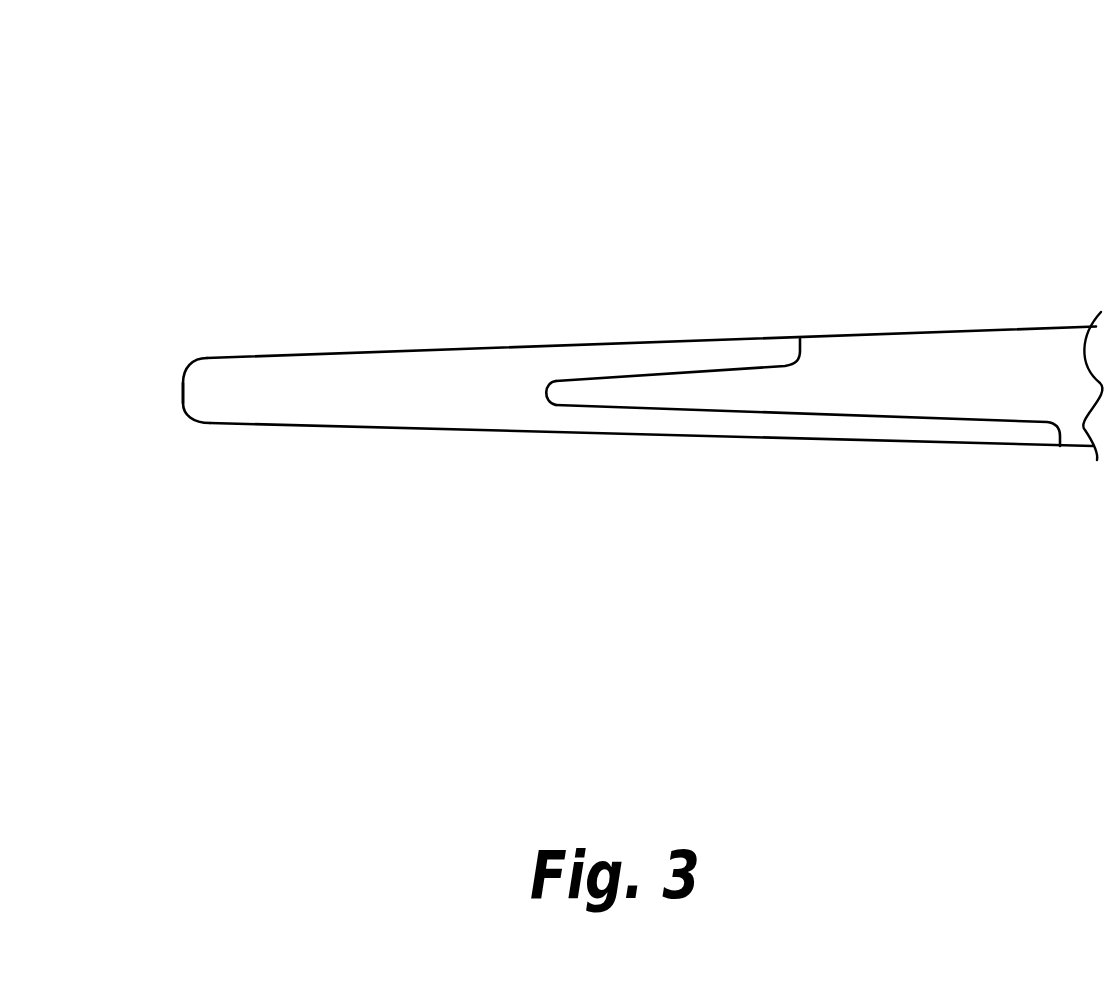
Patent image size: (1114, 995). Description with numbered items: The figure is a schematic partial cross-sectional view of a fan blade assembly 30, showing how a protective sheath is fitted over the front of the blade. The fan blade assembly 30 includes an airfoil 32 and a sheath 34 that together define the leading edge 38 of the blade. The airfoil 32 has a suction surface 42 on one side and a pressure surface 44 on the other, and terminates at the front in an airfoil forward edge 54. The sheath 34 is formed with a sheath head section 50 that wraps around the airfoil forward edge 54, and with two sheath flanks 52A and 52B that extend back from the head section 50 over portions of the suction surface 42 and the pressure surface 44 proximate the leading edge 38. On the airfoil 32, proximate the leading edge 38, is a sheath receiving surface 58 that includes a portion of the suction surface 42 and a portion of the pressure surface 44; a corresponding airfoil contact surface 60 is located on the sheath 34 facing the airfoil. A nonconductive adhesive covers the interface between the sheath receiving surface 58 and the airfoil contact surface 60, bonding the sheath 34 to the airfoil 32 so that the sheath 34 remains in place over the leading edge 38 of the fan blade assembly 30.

The fan blade assembly 30 is at (777, 61).
The airfoil 32 is at (980, 300).
The sheath 34 is at (314, 324).
The leading edge 38 is at (184, 407).
The suction surface 42 is at (823, 334).
The pressure surface 44 is at (1082, 443).
The sheath head section 50 is at (312, 397).
The sheath flank 52A is at (568, 365).
The sheath flank 52B is at (573, 420).
The airfoil forward edge 54 is at (546, 393).
The sheath receiving surface 58 is at (669, 365).
The airfoil contact surface 60 is at (755, 378).